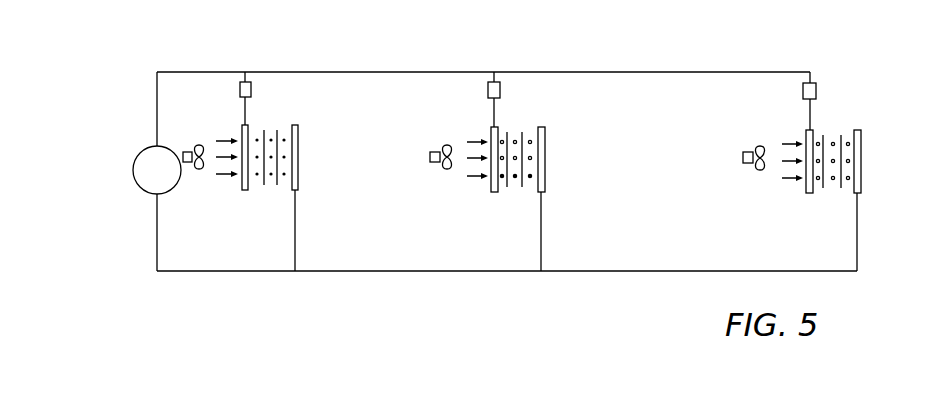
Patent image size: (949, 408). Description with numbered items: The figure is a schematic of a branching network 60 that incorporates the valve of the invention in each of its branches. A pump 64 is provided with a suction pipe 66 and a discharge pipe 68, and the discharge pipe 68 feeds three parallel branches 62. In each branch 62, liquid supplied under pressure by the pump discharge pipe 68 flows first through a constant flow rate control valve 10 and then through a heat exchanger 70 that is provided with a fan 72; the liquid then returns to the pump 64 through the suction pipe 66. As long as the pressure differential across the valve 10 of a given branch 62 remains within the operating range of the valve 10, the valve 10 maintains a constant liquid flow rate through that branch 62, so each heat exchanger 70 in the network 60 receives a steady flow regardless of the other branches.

The constant flow rate control valve 10 is at (251, 90).
The branching network 60 is at (663, 70).
The branch 62 is at (295, 225).
The pump 64 is at (133, 165).
The suction pipe 66 is at (490, 272).
The discharge pipe 68 is at (423, 72).
The heat exchanger 70 is at (298, 157).
The fan 72 is at (188, 162).